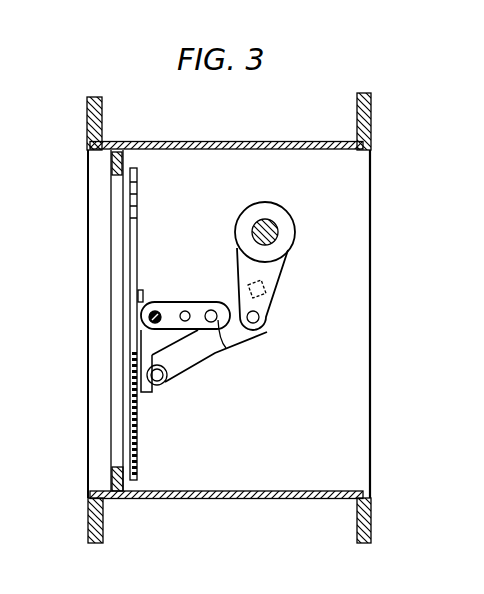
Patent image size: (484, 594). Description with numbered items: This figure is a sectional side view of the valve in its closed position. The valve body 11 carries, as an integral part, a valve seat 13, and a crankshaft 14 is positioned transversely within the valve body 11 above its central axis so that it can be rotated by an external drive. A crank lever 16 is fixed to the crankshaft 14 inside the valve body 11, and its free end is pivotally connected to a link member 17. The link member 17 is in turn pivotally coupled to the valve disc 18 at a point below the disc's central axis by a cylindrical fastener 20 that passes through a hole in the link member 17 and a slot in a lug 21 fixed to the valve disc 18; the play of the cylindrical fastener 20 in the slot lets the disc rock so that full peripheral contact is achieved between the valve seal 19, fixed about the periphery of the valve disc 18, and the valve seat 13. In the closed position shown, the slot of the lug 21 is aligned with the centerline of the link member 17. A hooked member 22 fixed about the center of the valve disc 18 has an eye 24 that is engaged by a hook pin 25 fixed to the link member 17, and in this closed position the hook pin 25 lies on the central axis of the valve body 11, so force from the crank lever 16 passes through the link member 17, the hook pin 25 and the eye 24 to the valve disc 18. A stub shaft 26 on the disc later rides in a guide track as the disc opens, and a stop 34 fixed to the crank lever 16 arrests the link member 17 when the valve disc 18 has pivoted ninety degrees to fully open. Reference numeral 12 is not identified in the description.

The valve body 11 is at (371, 102).
The top cover plate 12 is at (226, 142).
The valve seat 13 is at (124, 157).
The crankshaft 14 is at (277, 226).
The crank lever 16 is at (268, 306).
The link member 17 is at (197, 373).
The valve disc 18 is at (140, 207).
The valve seal 19 is at (122, 216).
The cylindrical fastener 20 is at (166, 381).
The lug 21 is at (146, 392).
The hooked member 22 is at (196, 302).
The eye 24 is at (227, 333).
The hook pin 25 is at (208, 320).
The stub shaft 26 is at (162, 302).
The stop 34 is at (258, 285).